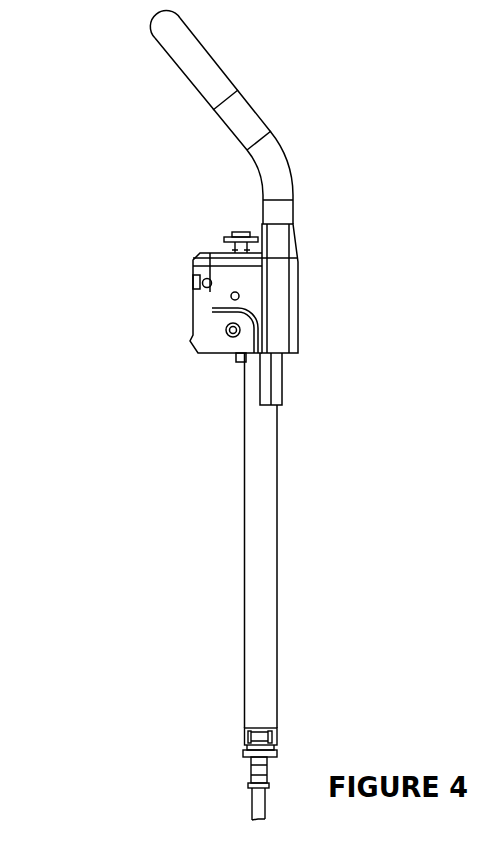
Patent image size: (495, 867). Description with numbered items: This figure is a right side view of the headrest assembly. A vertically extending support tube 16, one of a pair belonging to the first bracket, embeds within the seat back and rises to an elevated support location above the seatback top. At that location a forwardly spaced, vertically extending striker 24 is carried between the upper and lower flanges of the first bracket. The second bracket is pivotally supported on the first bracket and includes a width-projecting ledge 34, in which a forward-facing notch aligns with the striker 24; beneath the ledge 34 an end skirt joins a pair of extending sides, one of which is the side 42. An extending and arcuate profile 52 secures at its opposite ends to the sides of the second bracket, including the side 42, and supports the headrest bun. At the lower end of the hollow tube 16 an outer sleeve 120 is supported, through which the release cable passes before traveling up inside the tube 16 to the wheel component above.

The support tube 16 is at (245, 560).
The striker 24 is at (233, 230).
The ledge 34 is at (205, 251).
The side 42 is at (217, 299).
The arcuate profile 52 is at (193, 90).
The outer sleeve 120 is at (252, 803).